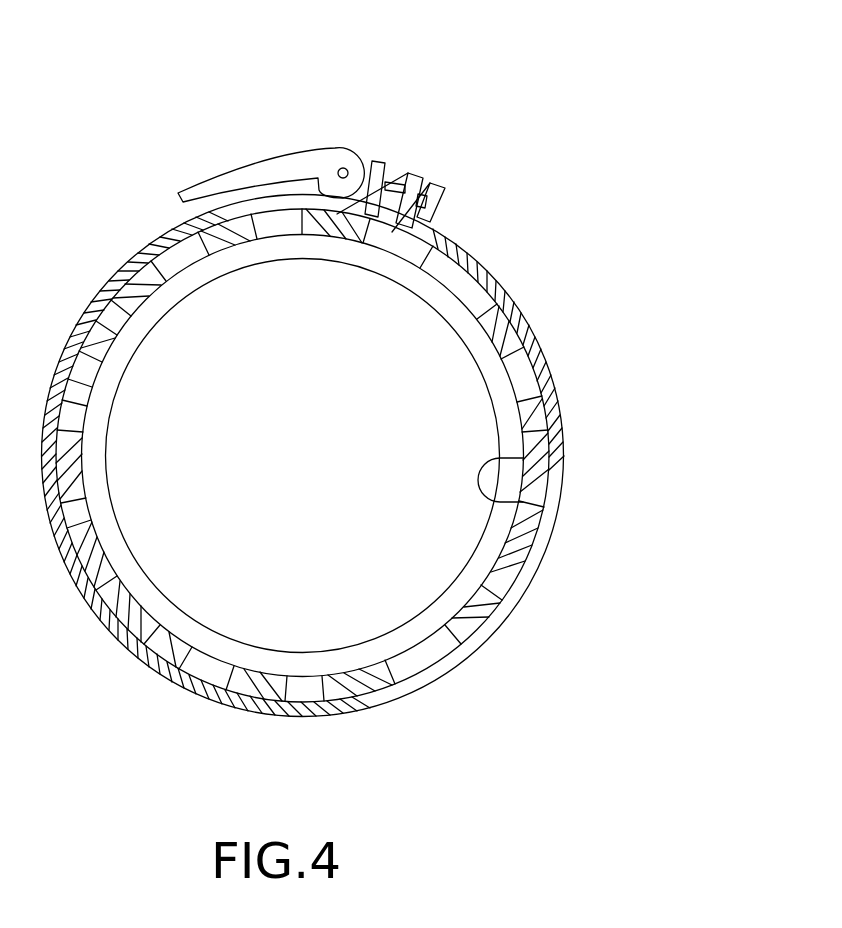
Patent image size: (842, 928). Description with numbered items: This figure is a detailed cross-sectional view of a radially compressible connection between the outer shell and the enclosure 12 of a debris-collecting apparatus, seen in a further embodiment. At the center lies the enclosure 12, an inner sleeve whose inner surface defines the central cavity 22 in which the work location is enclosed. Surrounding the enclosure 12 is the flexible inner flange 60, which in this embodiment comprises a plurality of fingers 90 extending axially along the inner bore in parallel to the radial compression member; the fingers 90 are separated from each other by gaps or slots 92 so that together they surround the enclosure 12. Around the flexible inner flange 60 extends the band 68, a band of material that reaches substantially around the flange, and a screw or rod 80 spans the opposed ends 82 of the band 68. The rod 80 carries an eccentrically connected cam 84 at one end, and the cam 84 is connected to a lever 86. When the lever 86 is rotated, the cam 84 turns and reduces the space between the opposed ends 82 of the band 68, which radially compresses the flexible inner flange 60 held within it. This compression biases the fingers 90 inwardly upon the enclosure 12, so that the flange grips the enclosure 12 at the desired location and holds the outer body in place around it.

The enclosure 12 is at (133, 333).
The central cavity 22 is at (370, 597).
The flexible inner flange 60 is at (525, 500).
The band 68 is at (468, 247).
The rod 80 is at (415, 173).
The opposed ends of the band 82 is at (385, 163).
The cam 84 is at (363, 161).
The lever 86 is at (270, 157).
The fingers 90 is at (522, 370).
The slots 92 is at (529, 516).